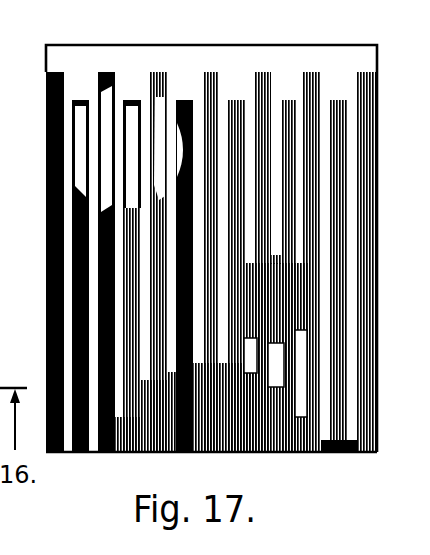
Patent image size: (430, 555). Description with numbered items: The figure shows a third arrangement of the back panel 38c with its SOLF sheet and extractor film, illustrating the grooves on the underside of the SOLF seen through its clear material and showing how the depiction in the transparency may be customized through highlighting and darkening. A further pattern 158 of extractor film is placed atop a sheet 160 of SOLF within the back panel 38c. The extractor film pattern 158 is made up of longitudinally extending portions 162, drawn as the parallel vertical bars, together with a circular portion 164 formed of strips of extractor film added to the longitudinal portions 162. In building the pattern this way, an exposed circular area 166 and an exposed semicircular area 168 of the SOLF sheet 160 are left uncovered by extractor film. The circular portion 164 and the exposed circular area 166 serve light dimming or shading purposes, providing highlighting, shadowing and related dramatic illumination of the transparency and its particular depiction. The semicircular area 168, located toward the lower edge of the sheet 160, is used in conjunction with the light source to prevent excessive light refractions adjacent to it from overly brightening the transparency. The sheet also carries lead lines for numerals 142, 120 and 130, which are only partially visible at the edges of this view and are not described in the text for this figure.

The back panel 38c is at (211, 268).
The pattern of extractor film 158 is at (298, 60).
The sheet of SOLF 160 is at (235, 467).
The longitudinally extending portions 162 is at (95, 106).
The circular portion 164 is at (103, 128).
The exposed circular area 166 is at (315, 265).
The exposed semicircular area 168 is at (112, 452).
The lead line 142 is at (0, 102).
The element 120 is at (34, 5).
The element 130 is at (80, 6).